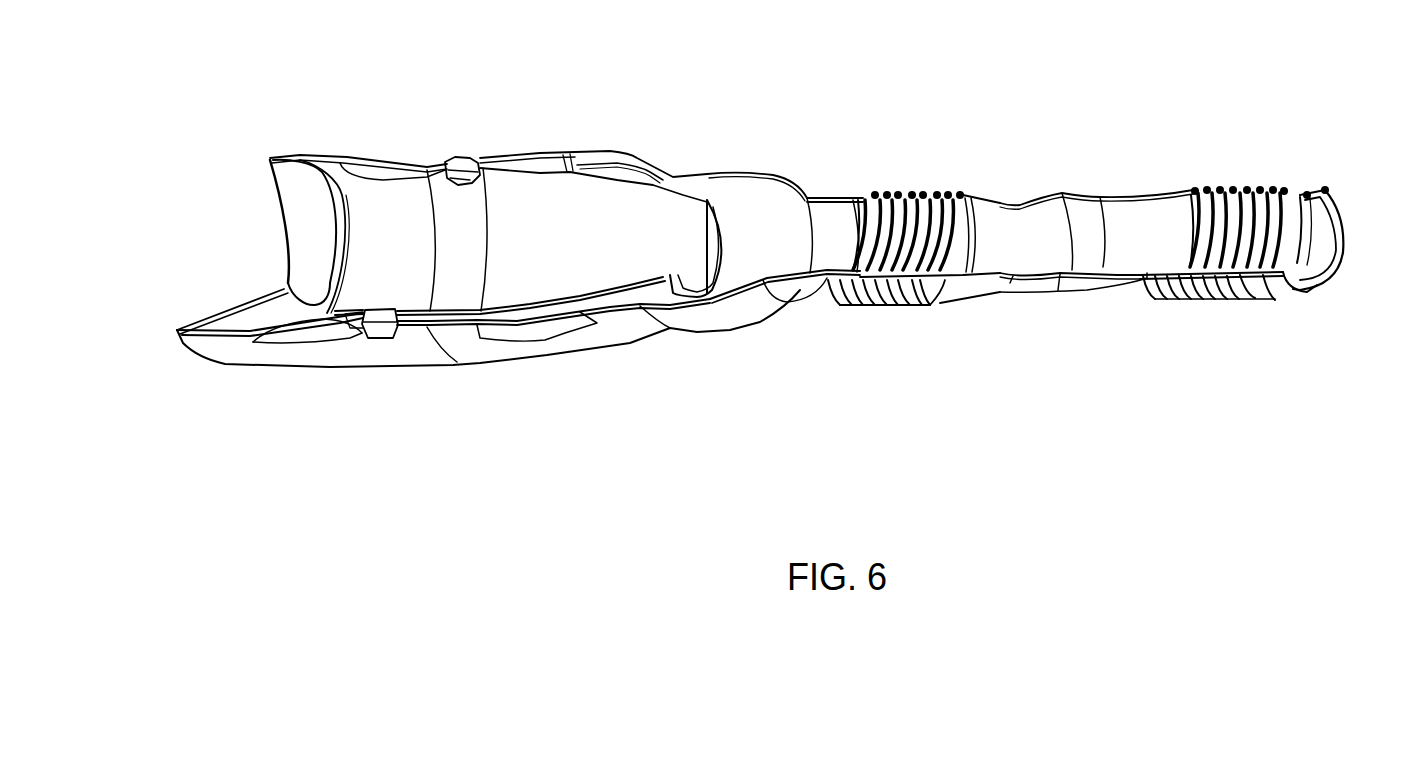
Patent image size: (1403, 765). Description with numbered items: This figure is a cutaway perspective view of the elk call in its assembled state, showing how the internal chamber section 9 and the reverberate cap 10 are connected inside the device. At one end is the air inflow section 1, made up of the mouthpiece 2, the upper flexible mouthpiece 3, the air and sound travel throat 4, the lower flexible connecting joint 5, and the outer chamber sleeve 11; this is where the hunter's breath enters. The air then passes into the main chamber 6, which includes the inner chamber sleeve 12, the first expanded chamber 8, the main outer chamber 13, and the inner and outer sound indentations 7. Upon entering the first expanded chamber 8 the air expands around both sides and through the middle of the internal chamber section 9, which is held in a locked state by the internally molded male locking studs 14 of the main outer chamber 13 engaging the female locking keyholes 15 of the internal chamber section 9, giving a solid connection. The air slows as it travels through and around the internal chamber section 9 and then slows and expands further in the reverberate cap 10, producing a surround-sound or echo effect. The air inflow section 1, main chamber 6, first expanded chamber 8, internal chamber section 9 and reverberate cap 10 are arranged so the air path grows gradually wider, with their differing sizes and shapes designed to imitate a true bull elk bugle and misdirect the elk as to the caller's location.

The air inflow section 1 is at (1030, 120).
The mouthpiece 2 is at (1290, 210).
The upper flexible mouthpiece 3 is at (1218, 190).
The air and sound travel throat 4 is at (1077, 215).
The lower flexible connecting joint 5 is at (928, 197).
The main chamber 6 is at (465, 415).
The inner and outer sound indentations 7 is at (370, 163).
The first expanded chamber 8 is at (730, 197).
The internal chamber section 9 is at (520, 213).
The reverberate cap 10 is at (303, 198).
The outer chamber sleeve 11 is at (798, 287).
The inner chamber sleeve 12 is at (818, 220).
The main outer chamber 13 is at (403, 345).
The male locking studs 14 is at (457, 188).
The female locking keyholes 15 is at (467, 160).